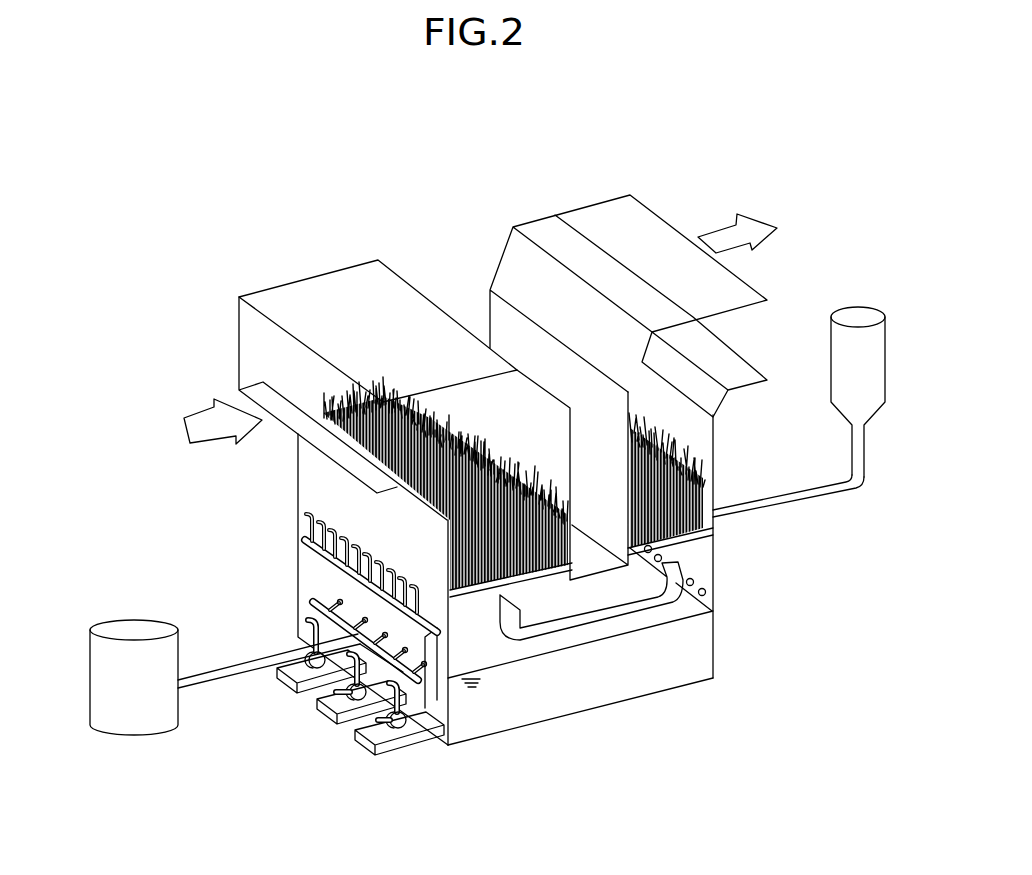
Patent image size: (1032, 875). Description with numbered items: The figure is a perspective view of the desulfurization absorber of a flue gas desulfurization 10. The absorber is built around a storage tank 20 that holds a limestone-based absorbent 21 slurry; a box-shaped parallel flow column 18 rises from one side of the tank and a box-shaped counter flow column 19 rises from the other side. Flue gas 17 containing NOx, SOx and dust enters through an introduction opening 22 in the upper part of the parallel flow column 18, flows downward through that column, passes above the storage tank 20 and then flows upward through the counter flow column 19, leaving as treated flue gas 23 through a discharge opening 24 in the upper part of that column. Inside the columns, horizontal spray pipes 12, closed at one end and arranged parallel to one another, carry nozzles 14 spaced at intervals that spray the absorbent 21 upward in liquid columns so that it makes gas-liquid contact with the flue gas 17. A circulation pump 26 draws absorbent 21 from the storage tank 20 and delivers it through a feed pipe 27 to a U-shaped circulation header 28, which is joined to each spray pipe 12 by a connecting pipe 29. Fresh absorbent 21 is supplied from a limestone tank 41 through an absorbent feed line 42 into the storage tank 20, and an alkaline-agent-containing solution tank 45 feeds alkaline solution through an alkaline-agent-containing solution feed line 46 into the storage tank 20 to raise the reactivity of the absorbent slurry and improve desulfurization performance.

The flue gas desulfurization 10 is at (468, 191).
The spray pipe 12 is at (483, 585).
The nozzle 14 is at (457, 592).
The flue gas 17 is at (200, 432).
The parallel flow column 18 is at (310, 481).
The counter flow column 19 is at (715, 453).
The storage tank 20 is at (610, 705).
The absorbent 21 is at (672, 684).
The introduction opening 22 is at (247, 325).
The treated flue gas 23 is at (730, 226).
The discharge opening 24 is at (723, 355).
The circulation pump 26 is at (340, 722).
The feed pipe 27 is at (378, 724).
The circulation header 28 is at (327, 568).
The connecting pipe 29 is at (308, 523).
The limestone tank 41 is at (857, 313).
The absorbent feed line 42 is at (838, 487).
The alkaline-agent-containing solution tank 45 is at (133, 628).
The alkaline-agent-containing solution feed line 46 is at (222, 672).